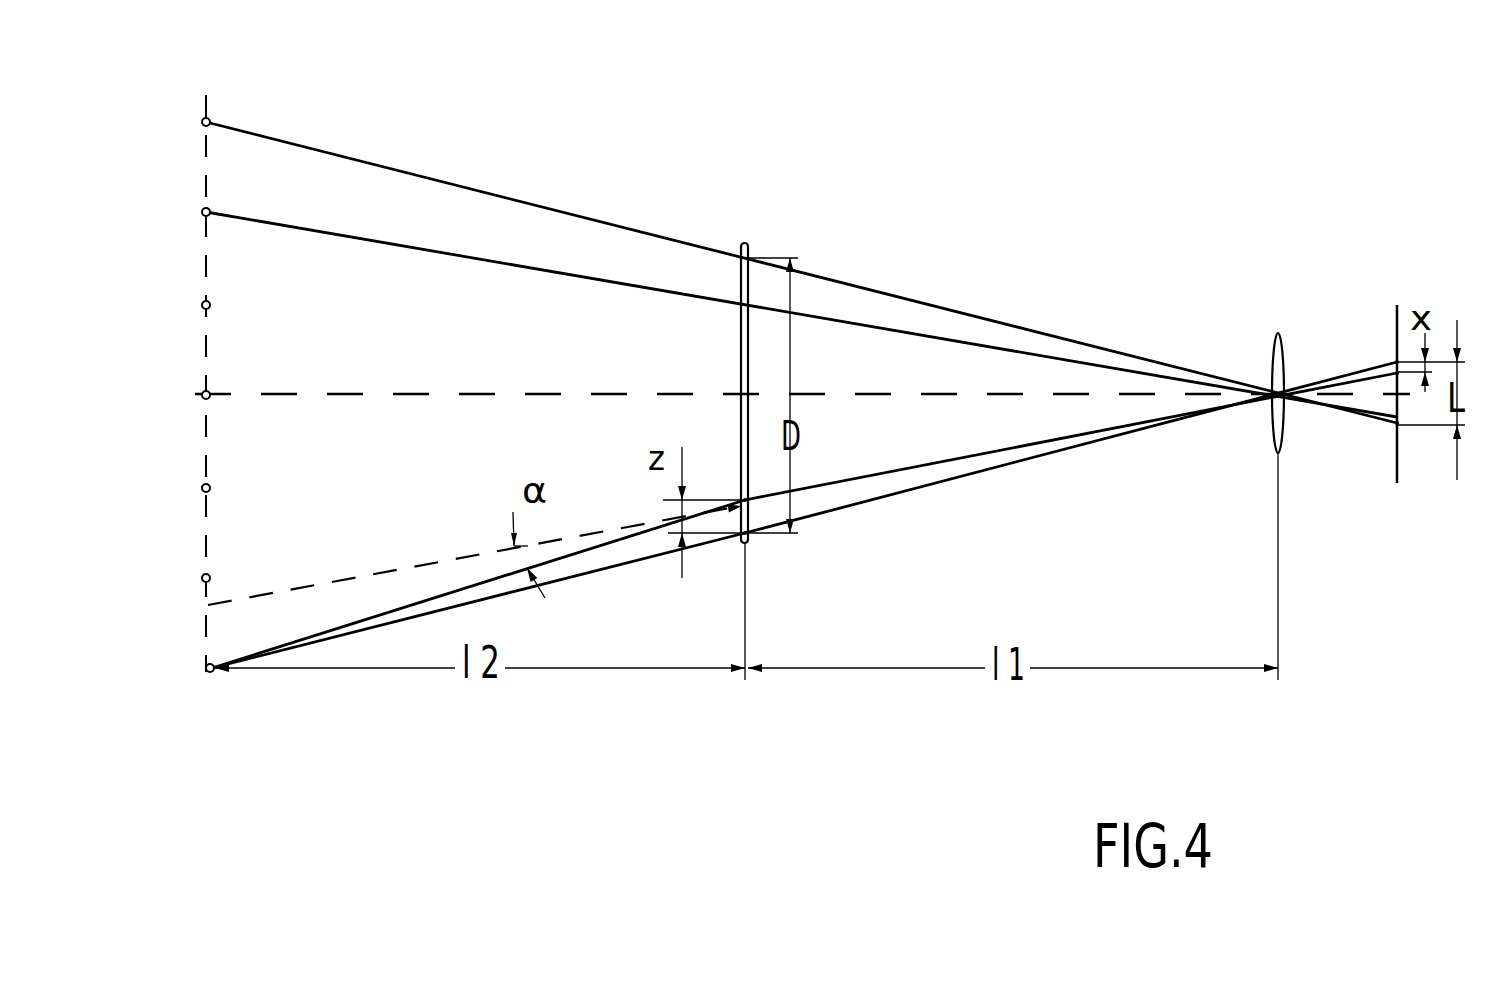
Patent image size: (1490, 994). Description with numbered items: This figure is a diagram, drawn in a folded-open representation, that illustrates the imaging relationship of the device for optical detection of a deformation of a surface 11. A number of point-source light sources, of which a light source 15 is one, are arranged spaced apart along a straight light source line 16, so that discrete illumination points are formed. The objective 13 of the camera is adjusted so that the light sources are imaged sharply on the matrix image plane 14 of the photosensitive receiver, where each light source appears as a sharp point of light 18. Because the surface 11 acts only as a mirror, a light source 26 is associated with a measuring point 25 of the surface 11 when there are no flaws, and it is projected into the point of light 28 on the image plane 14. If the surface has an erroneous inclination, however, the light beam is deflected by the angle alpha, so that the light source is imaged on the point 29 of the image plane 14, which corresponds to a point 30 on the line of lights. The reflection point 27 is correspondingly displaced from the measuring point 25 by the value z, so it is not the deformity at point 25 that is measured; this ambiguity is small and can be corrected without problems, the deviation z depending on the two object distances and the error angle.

The surface 11 is at (741, 246).
The objective 13 is at (1278, 333).
The matrix image plane 14 is at (1397, 305).
The light source 15 is at (205, 212).
The light source line 16 is at (205, 97).
The point of light 18 is at (1398, 425).
The measuring point 25 is at (748, 534).
The light source 26 is at (208, 668).
The reflection point 27 is at (745, 500).
The point of light 28 is at (1397, 361).
The point of the image plane 29 is at (1397, 378).
The point on the line of lights 30 is at (205, 605).